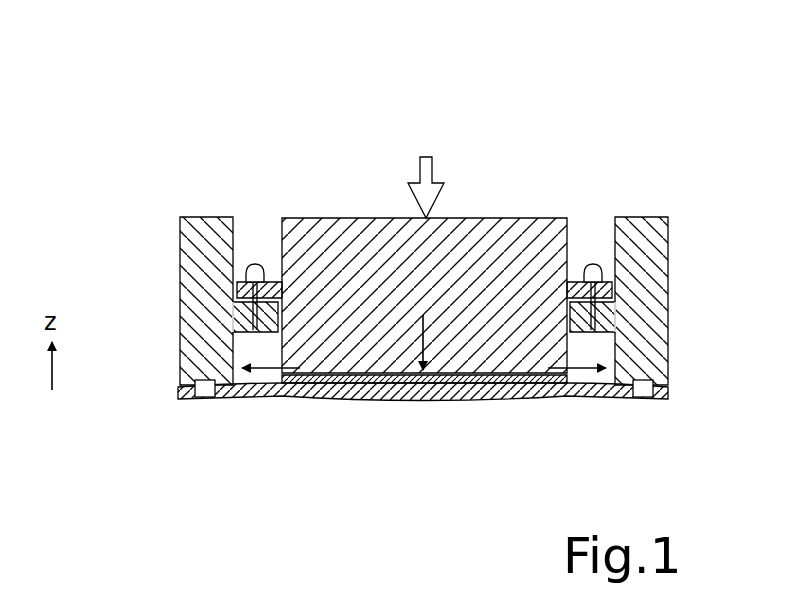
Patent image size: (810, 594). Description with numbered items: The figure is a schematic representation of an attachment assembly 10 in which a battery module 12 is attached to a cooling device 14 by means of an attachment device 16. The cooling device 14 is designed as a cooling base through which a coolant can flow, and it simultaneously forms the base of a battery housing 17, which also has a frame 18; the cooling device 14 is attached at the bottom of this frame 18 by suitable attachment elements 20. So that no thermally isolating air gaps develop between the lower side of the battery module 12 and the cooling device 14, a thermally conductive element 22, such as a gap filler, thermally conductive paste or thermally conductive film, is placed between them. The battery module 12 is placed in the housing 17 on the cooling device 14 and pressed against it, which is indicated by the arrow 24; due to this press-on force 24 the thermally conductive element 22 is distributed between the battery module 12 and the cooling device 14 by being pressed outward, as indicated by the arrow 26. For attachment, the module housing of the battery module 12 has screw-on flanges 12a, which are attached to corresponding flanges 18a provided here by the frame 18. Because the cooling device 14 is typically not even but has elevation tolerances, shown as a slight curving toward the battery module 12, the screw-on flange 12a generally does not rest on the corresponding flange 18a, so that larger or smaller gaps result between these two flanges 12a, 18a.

The attachment assembly 10 is at (195, 133).
The battery module 12 is at (490, 218).
The screw-on flange 12a is at (237, 292).
The cooling device 14 is at (440, 399).
The attachment device 16 is at (257, 259).
The battery housing 17 is at (179, 215).
The frame 18 is at (209, 217).
The flange 18a is at (272, 329).
The attachment element 20 is at (205, 398).
The thermally conductive element 22 is at (292, 390).
The arrow 24 is at (426, 157).
The arrow 26 is at (270, 392).